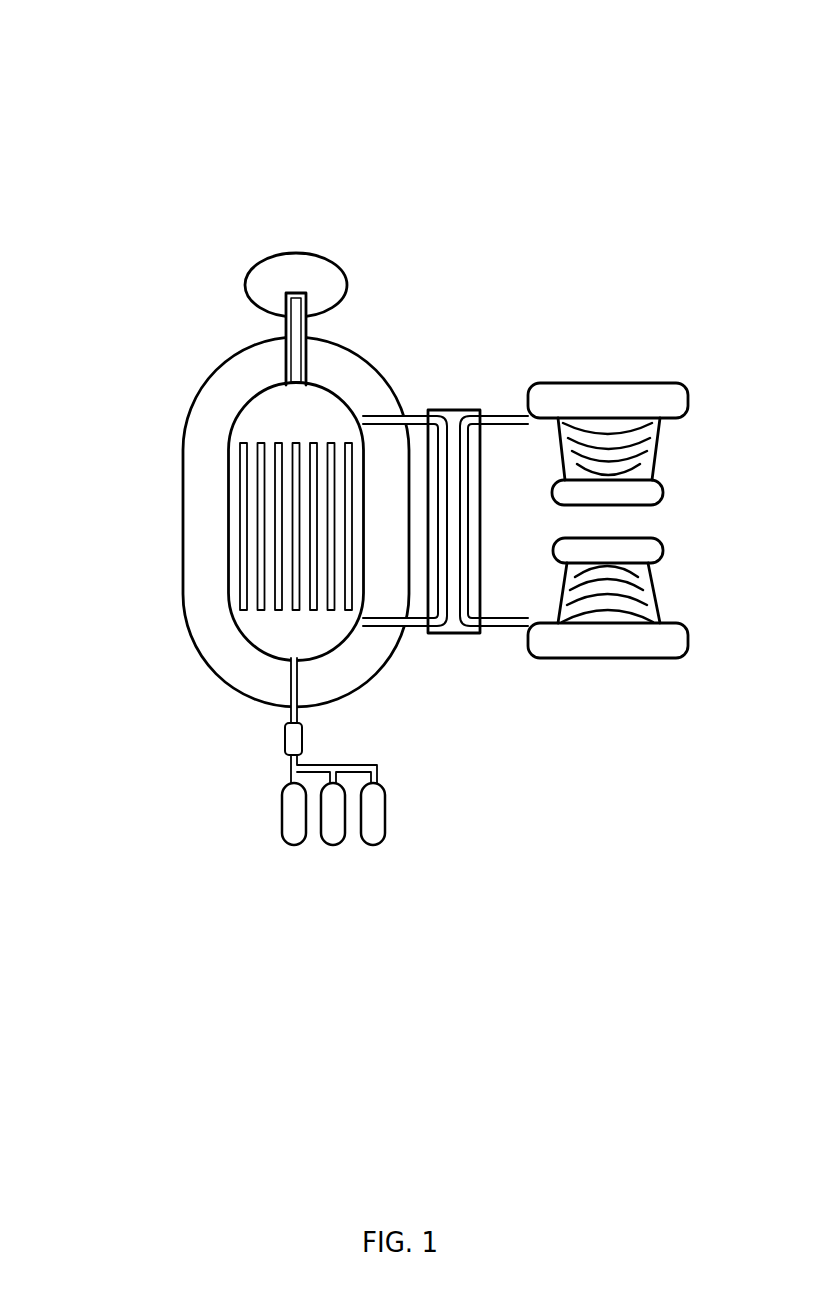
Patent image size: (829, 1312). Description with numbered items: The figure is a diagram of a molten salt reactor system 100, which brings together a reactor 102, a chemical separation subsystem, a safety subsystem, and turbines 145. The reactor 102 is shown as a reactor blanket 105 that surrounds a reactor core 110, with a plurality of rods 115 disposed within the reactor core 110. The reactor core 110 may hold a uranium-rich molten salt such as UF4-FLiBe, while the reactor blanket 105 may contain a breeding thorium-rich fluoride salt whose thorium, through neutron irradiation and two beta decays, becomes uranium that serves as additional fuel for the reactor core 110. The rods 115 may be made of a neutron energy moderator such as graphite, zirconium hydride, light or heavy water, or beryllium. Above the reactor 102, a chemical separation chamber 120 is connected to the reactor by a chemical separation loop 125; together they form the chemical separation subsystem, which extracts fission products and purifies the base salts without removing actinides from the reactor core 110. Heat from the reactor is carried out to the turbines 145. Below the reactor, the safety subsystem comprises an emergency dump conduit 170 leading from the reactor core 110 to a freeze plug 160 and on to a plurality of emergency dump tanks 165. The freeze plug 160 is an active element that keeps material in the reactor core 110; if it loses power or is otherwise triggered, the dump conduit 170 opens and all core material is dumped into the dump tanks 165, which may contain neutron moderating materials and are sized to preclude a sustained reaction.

The molten salt reactor system 100 is at (459, 78).
The reactor 102 is at (107, 330).
The reactor blanket 105 is at (217, 382).
The reactor core 110 is at (237, 423).
The rods 115 is at (243, 493).
The chemical separation chamber 120 is at (275, 268).
The chemical separation loop 125 is at (285, 333).
The turbines 145 is at (670, 400).
The freeze plug 160 is at (285, 742).
The emergency dump tanks 165 is at (388, 847).
The emergency dump conduit 170 is at (292, 713).